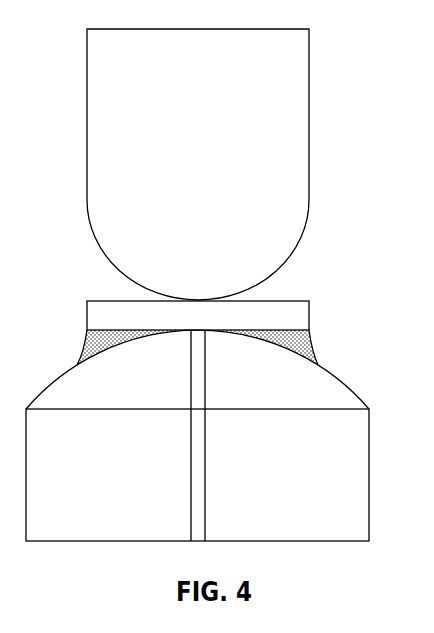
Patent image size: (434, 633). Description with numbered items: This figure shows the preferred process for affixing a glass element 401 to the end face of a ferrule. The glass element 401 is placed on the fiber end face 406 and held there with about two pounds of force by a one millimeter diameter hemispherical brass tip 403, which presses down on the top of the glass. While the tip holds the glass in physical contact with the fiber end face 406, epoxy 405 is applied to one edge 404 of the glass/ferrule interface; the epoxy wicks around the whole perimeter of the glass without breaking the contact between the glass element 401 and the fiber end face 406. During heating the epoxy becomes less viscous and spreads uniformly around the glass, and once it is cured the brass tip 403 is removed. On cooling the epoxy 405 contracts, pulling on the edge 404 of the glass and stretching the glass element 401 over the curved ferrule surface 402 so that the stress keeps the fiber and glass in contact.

The glass element 401 is at (295, 310).
The dome body 402 is at (224, 341).
The hemispherical brass tip 403 is at (98, 151).
The edge of the glass 404 is at (310, 316).
The epoxy 405 is at (309, 350).
The fiber end face 406 is at (192, 341).